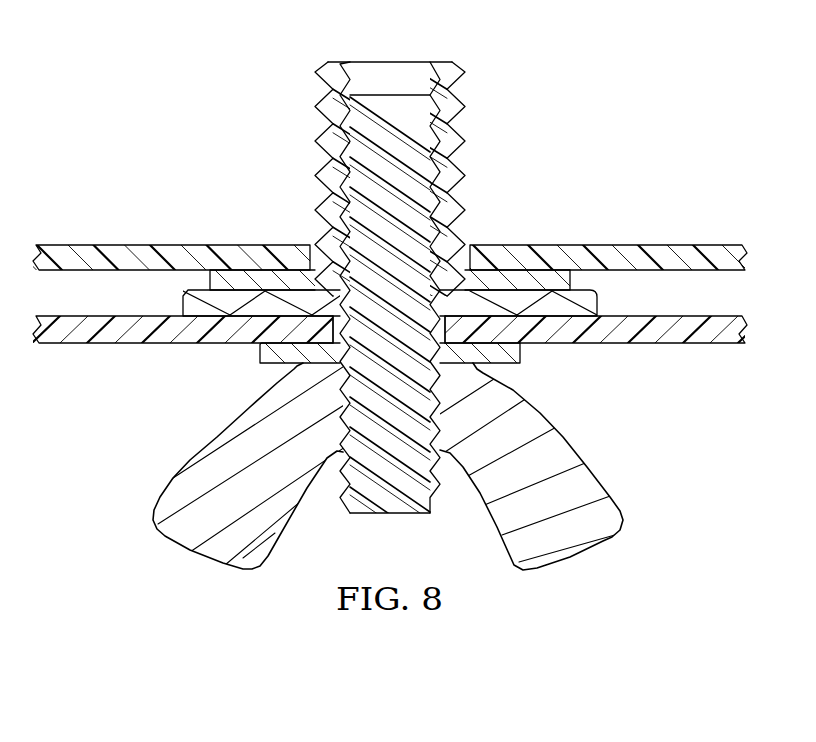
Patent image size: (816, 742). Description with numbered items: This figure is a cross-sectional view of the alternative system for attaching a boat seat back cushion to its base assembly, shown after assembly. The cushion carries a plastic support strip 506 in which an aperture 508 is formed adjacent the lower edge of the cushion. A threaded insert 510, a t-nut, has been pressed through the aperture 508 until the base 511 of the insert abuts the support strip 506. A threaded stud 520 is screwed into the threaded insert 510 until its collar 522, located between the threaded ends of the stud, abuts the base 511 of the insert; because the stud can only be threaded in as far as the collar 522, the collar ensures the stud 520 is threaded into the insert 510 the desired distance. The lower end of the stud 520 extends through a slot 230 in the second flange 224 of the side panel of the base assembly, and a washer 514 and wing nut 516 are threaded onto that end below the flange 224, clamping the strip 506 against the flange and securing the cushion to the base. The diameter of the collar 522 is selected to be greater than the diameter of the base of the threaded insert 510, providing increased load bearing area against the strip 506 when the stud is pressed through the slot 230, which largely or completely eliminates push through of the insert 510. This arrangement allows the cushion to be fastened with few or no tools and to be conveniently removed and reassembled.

The support strip 506 is at (160, 245).
The second flange 224 is at (160, 344).
The base of the threaded insert 511 is at (210, 279).
The collar 522 is at (598, 303).
The washer 514 is at (510, 360).
The threaded insert 510 is at (308, 185).
The aperture 508 is at (453, 234).
The threaded stud 520 is at (387, 88).
The slot 230 is at (350, 327).
The wing nut 516 is at (577, 557).